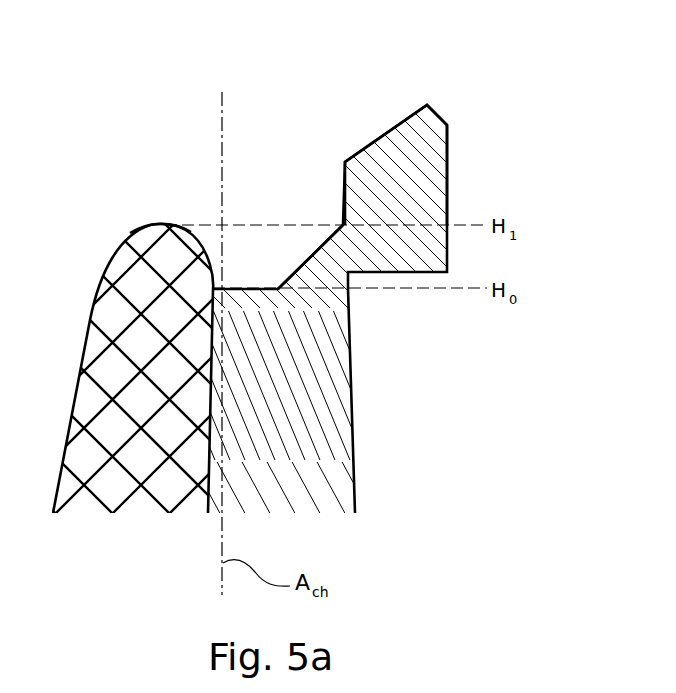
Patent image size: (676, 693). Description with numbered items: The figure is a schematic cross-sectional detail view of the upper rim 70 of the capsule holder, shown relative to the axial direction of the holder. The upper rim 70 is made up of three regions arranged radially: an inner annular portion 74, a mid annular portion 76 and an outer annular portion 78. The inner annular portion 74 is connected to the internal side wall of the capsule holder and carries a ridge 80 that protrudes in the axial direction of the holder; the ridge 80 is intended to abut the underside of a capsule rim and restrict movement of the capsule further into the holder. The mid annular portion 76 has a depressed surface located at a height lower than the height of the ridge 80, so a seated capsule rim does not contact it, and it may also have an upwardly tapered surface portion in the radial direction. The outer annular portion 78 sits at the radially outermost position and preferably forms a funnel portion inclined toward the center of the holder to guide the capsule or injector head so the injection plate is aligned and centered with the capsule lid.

The upper rim 70 is at (328, 110).
The inner annular portion 74 is at (173, 210).
The mid annular portion 76 is at (266, 218).
The outer annular portion 78 is at (393, 118).
The ridge 80 is at (142, 227).